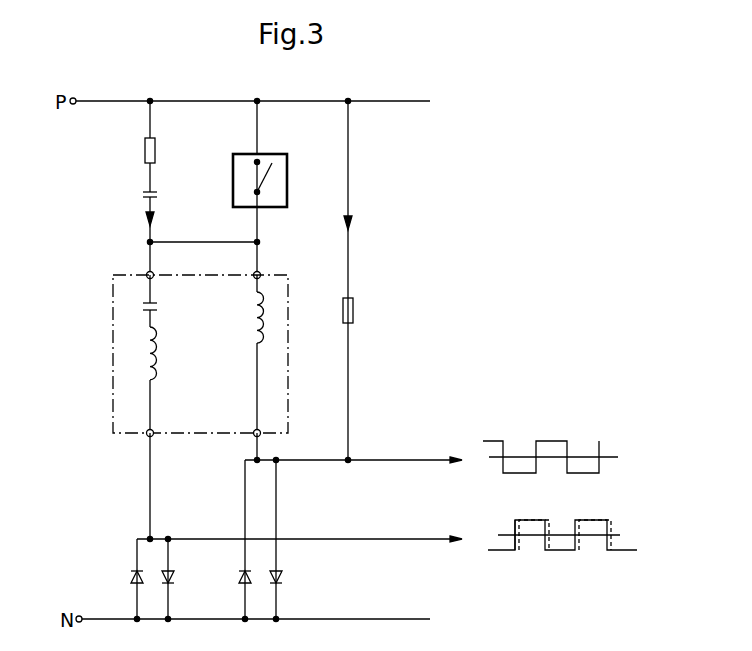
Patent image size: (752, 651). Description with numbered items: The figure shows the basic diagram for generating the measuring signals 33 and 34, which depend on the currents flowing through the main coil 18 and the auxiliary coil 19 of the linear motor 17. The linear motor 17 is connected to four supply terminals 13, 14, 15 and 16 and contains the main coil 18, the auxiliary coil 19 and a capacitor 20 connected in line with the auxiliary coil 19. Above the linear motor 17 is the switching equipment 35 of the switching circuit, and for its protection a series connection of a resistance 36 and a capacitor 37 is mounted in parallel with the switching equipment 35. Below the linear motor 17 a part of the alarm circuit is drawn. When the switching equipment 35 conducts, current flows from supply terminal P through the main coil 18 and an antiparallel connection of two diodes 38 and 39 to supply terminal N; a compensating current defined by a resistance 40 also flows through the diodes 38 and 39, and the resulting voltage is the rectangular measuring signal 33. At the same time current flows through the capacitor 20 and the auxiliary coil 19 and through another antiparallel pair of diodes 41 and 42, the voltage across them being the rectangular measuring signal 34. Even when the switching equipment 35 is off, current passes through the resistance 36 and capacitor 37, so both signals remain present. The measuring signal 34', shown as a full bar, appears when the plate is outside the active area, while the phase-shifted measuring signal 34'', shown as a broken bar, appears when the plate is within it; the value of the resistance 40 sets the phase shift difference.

The supply terminal 13 is at (148, 272).
The supply terminal 14 is at (259, 272).
The supply terminal 15 is at (255, 436).
The supply terminal 16 is at (148, 436).
The linear motor 17 is at (113, 345).
The main coil 18 is at (257, 318).
The auxiliary coil 19 is at (160, 358).
The capacitor 20 is at (160, 302).
The measuring signal 33 is at (610, 428).
The measuring signal 34 is at (564, 556).
The measuring signal 34' is at (565, 518).
The measuring signal 34'' is at (541, 562).
The switching equipment 35 is at (290, 181).
The resistance 36 is at (145, 151).
The capacitor 37 is at (143, 194).
The diode 38 is at (250, 576).
The diode 39 is at (281, 577).
The resistance 40 is at (355, 310).
The diode 41 is at (133, 578).
The diode 42 is at (166, 573).